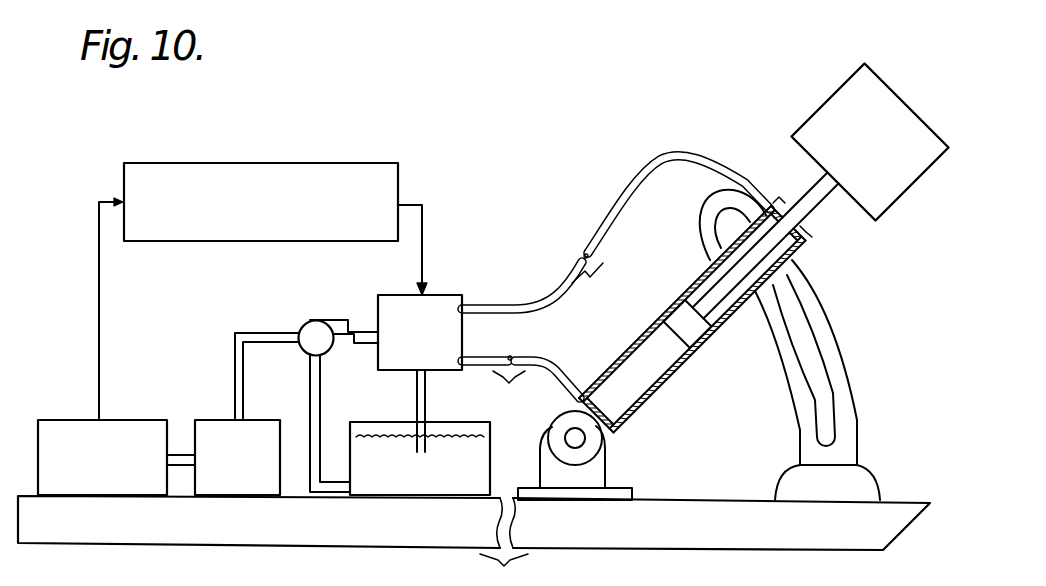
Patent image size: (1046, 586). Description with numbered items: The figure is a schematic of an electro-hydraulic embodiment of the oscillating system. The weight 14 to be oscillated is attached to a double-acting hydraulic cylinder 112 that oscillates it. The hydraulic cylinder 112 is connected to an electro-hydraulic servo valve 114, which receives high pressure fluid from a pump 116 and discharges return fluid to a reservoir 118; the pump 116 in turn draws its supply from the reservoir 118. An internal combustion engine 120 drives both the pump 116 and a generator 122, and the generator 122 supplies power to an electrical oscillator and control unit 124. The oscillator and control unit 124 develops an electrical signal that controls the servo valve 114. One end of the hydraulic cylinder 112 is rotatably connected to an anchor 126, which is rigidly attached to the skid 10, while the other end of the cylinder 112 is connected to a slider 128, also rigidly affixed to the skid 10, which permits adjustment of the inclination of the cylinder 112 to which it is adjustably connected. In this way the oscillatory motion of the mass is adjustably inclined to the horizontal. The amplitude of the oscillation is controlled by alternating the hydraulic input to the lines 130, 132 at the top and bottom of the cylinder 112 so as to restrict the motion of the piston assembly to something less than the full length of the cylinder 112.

The skid 10 is at (755, 505).
The weight 14 is at (822, 118).
The double-acting hydraulic cylinder 112 is at (686, 369).
The electro-hydraulic servo valve 114 is at (433, 297).
The pump 116 is at (334, 318).
The reservoir 118 is at (466, 422).
The internal combustion engine 120 is at (218, 428).
The generator 122 is at (112, 428).
The electrical oscillator and control unit 124 is at (293, 163).
The anchor 126 is at (600, 456).
The slider 128 is at (826, 330).
The hydraulic line 130 is at (537, 352).
The hydraulic line 132 is at (650, 168).